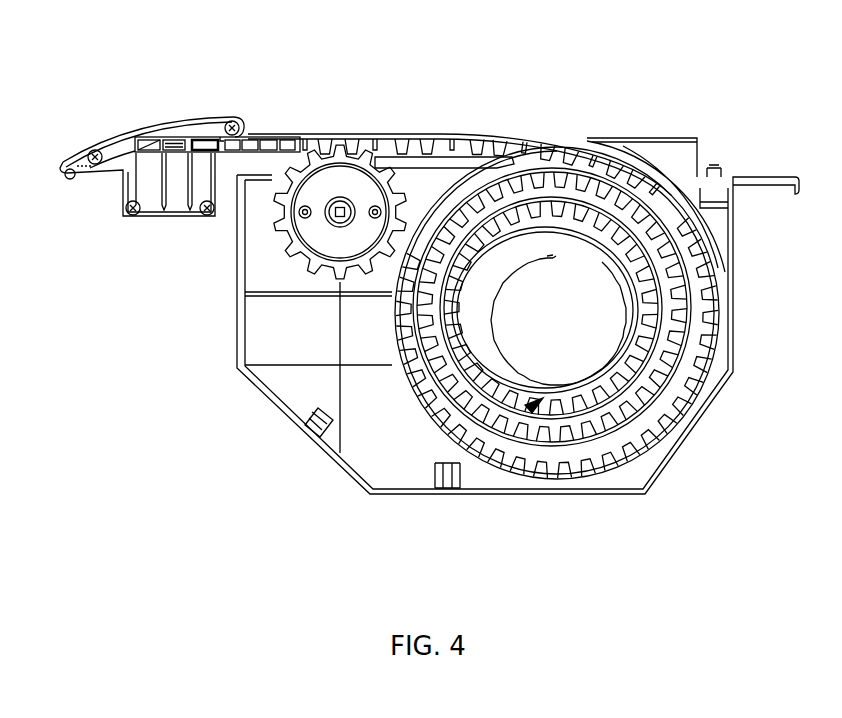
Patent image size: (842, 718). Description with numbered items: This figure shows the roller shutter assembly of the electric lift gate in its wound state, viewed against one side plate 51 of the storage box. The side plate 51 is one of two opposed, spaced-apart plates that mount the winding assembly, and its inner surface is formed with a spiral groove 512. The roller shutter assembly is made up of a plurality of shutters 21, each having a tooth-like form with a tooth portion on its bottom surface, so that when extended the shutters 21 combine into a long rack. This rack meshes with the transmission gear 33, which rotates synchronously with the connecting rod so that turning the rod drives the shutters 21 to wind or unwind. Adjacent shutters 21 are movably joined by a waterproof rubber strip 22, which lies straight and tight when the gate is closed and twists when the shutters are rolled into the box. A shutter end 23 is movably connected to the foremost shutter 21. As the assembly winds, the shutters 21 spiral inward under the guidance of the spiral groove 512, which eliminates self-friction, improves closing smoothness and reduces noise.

The shutter 21 is at (336, 148).
The waterproof rubber strip 22 is at (373, 148).
The shutter end 23 is at (178, 133).
The transmission gear 33 is at (283, 235).
The side plate 51 is at (297, 355).
The spiral groove 512 is at (527, 408).